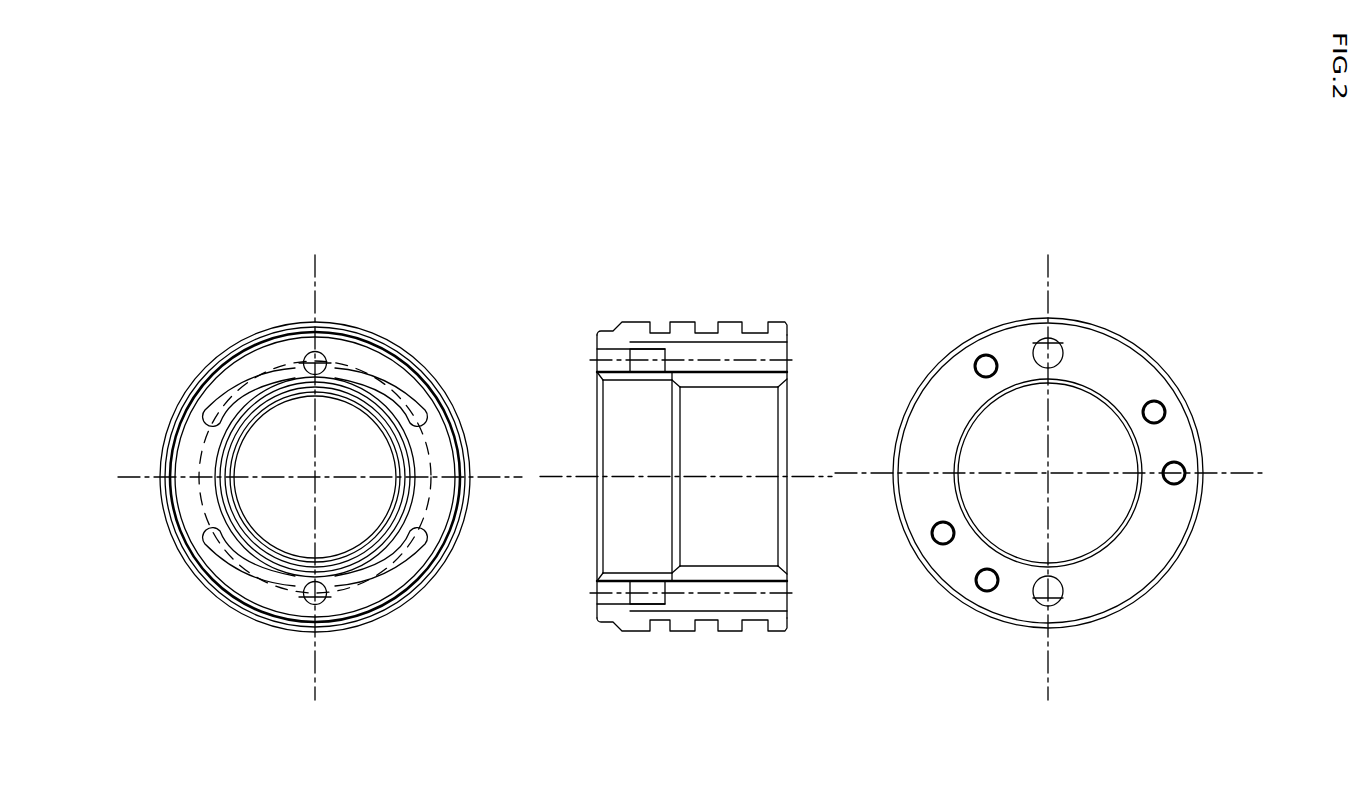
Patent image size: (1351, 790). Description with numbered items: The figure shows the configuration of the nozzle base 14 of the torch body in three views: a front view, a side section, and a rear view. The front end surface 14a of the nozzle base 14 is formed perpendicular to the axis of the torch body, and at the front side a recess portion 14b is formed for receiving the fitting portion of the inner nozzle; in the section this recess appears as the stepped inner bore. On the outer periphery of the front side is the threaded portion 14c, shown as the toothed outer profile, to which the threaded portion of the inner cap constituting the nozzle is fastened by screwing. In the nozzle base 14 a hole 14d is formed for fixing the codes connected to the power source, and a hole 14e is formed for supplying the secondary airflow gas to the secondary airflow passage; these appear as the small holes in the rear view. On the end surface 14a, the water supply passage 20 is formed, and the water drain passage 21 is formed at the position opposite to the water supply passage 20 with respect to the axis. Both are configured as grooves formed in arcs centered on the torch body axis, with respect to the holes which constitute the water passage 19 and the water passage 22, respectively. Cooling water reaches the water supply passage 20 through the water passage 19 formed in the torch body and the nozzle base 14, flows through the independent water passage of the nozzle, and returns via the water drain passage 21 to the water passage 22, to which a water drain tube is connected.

The nozzle base 14 is at (365, 320).
The front end surface 14a is at (187, 497).
The recess portion 14b is at (348, 528).
The threaded portion 14c is at (178, 410).
The hole 14d is at (942, 540).
The hole 14e is at (1153, 405).
The water passage 19 is at (305, 352).
The water supply passage 20 is at (233, 388).
The water drain passage 21 is at (253, 585).
The water passage 22 is at (323, 600).